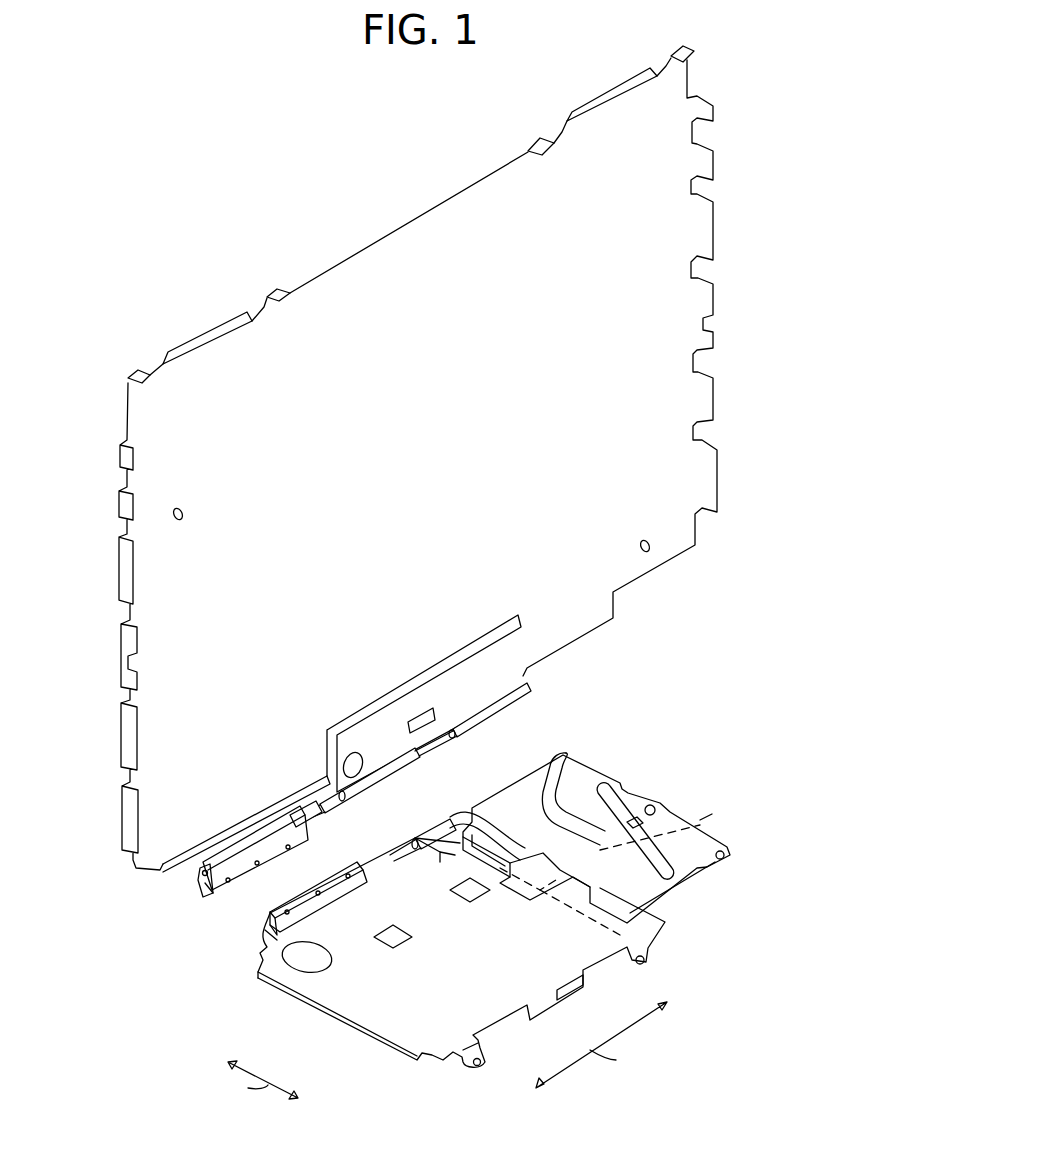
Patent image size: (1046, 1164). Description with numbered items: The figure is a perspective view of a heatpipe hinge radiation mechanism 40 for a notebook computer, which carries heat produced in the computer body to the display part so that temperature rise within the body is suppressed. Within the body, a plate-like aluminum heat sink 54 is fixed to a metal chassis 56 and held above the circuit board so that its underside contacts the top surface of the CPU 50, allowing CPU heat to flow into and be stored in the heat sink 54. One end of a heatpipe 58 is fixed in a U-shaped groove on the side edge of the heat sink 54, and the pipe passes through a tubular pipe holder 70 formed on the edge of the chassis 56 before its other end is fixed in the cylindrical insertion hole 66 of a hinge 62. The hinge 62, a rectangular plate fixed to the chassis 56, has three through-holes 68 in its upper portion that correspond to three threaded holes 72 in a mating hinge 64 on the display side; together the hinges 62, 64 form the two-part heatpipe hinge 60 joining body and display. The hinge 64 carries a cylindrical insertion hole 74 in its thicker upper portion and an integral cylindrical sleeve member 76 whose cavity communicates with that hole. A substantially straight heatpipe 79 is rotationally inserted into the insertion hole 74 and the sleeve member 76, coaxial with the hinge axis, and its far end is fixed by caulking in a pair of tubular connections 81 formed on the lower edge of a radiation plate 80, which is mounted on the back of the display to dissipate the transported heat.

The heatpipe hinge radiation mechanism 40 is at (752, 126).
The radiation plate 80 is at (655, 378).
The tubular connections 81 is at (530, 690).
The heatpipe 79 is at (344, 806).
The sleeve member 76 is at (308, 824).
The threaded holes 72 is at (288, 848).
The insertion hole 74 is at (198, 876).
The hinge 64 is at (212, 894).
The hinge 62 is at (262, 922).
The heatpipe hinge 60 is at (173, 906).
The through-holes 68 is at (287, 912).
The insertion hole 66 is at (265, 932).
The pipe holder 70 is at (428, 832).
The heatpipe 58 is at (482, 820).
The heat sink 54 is at (592, 770).
The chassis 56 is at (355, 1028).
The CPU 50 is at (703, 815).